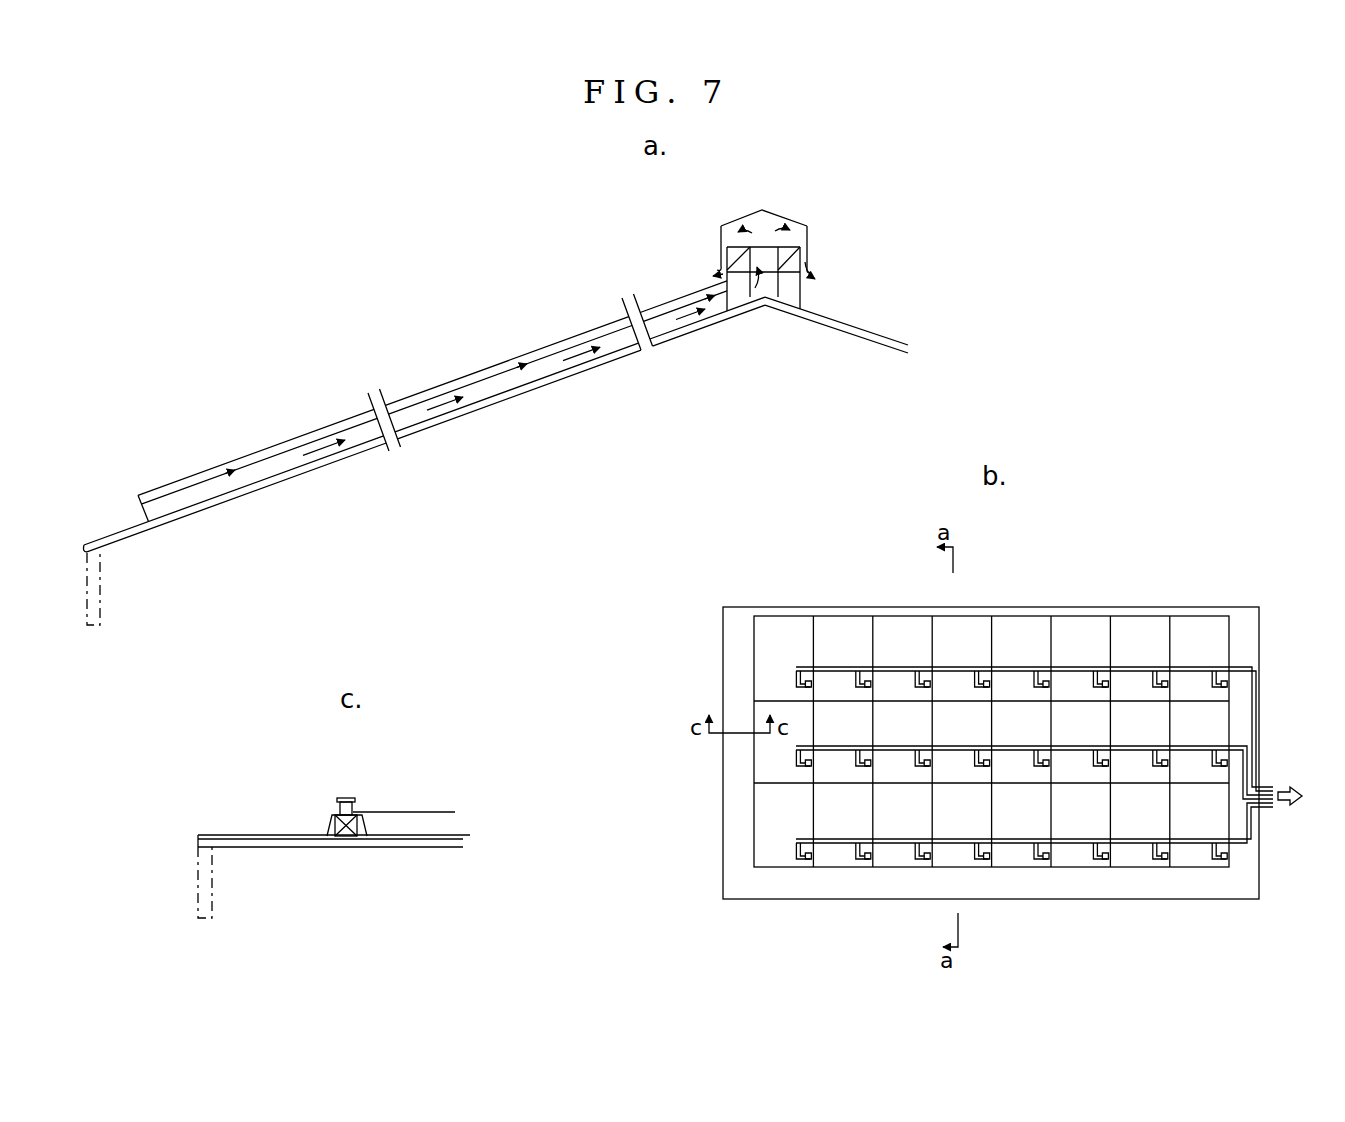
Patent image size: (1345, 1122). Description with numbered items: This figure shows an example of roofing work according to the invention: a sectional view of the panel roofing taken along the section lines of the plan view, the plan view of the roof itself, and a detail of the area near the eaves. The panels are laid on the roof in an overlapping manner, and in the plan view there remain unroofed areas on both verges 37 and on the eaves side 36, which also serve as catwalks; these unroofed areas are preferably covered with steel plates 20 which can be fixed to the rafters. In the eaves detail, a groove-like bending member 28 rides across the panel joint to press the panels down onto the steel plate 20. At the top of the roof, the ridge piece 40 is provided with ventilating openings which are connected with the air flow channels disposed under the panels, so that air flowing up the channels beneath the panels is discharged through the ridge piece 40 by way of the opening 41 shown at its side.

The steel plate 20 is at (253, 835).
The groove-like bending member 28 is at (347, 837).
The eaves side 36 is at (121, 534).
The verge 37 is at (733, 648).
The ridge piece 40 is at (765, 220).
The exhaust opening 41 is at (832, 290).